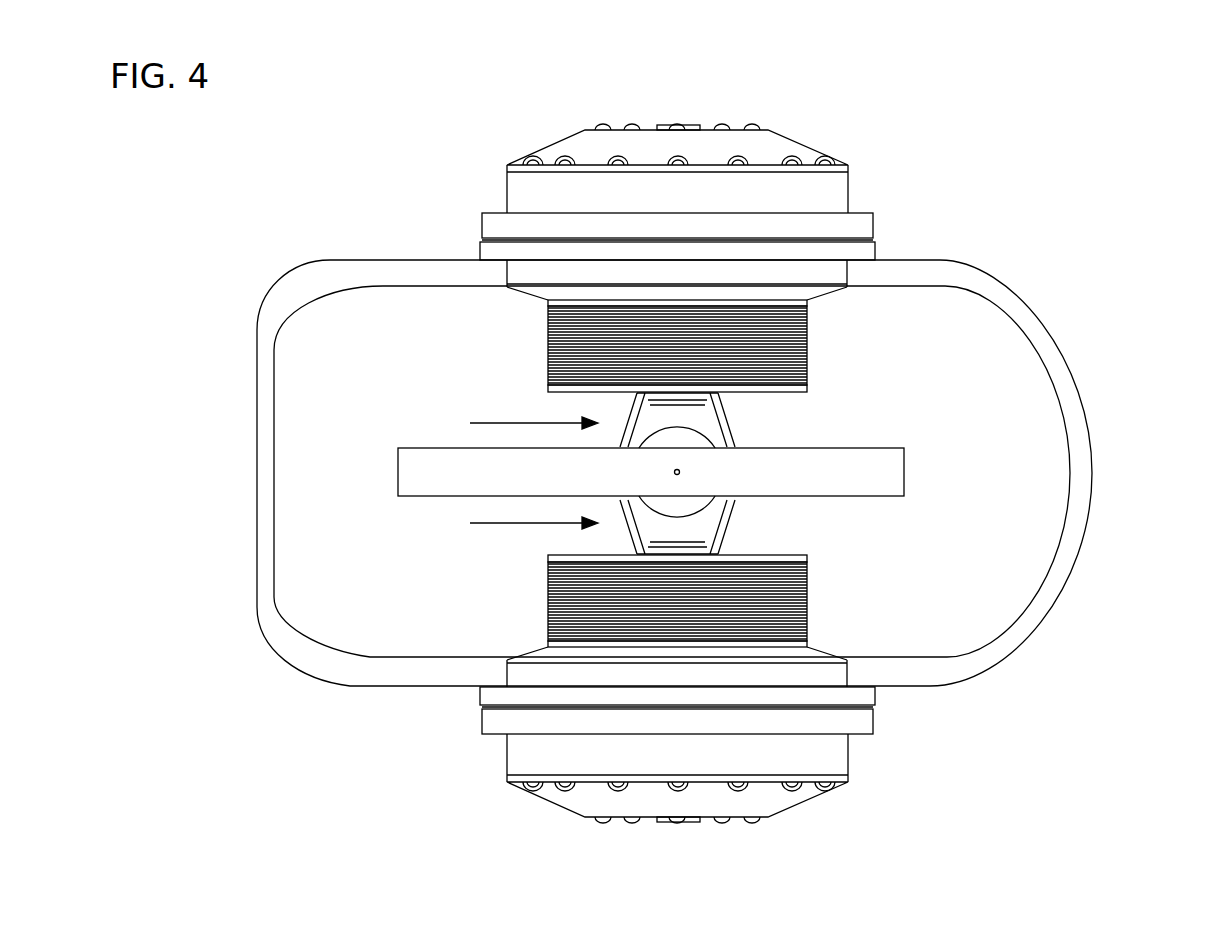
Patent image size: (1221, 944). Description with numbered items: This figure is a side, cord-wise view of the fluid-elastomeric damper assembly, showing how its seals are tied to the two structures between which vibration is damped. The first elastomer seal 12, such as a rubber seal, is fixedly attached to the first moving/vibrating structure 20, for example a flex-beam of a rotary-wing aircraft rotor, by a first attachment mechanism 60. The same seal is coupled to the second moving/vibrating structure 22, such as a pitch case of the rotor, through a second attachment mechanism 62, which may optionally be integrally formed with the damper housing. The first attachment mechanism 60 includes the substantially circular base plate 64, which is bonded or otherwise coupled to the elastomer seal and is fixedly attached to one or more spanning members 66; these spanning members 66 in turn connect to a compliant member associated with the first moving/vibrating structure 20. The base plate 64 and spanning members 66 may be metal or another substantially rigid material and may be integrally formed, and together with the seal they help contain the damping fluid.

The first elastomer seal 12 is at (807, 320).
The first moving/vibrating structure 20 is at (904, 467).
The second moving/vibrating structure 22 is at (1092, 470).
The first attachment mechanism 60 is at (728, 422).
The second attachment mechanism 62 is at (883, 247).
The substantially circular base plate 64 is at (807, 385).
The spanning members 66 is at (492, 423).